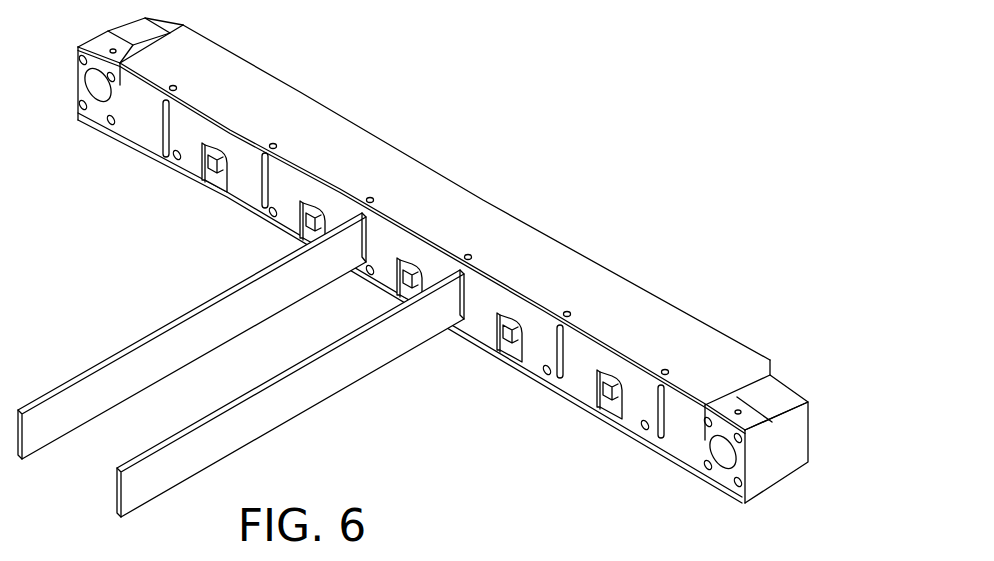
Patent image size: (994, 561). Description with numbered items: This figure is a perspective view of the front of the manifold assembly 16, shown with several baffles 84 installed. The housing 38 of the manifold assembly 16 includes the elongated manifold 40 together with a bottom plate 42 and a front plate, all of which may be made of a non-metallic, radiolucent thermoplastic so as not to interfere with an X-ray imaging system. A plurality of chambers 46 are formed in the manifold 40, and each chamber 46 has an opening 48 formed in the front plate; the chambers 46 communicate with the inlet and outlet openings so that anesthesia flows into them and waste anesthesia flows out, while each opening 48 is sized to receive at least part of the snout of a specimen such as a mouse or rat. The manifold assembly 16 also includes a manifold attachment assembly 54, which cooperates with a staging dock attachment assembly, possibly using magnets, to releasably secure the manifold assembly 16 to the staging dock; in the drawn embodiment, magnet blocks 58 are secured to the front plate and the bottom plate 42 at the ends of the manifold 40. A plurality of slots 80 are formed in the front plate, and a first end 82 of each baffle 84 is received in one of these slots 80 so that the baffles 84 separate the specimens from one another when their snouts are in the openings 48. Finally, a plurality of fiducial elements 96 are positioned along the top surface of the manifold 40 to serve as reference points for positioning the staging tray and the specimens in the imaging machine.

The manifold assembly 16 is at (440, 281).
The housing 38 is at (541, 229).
The manifold 40 is at (386, 153).
The bottom plate 42 is at (214, 181).
The chambers 46 is at (512, 351).
The opening 48 is at (392, 284).
The manifold attachment assembly 54 is at (93, 137).
The magnet blocks 58 is at (798, 432).
The slots 80 is at (275, 145).
The first end 82 is at (450, 328).
The baffles 84 is at (188, 338).
The fiducial elements 96 is at (174, 84).